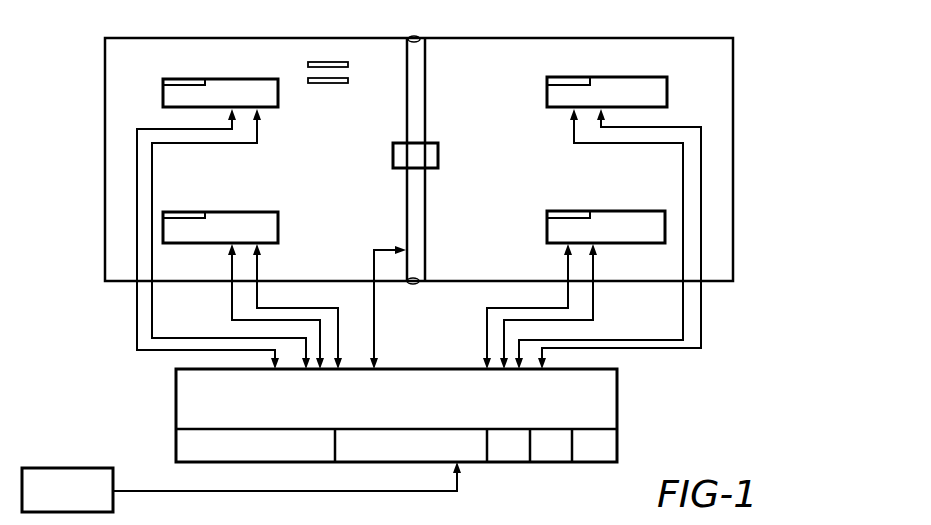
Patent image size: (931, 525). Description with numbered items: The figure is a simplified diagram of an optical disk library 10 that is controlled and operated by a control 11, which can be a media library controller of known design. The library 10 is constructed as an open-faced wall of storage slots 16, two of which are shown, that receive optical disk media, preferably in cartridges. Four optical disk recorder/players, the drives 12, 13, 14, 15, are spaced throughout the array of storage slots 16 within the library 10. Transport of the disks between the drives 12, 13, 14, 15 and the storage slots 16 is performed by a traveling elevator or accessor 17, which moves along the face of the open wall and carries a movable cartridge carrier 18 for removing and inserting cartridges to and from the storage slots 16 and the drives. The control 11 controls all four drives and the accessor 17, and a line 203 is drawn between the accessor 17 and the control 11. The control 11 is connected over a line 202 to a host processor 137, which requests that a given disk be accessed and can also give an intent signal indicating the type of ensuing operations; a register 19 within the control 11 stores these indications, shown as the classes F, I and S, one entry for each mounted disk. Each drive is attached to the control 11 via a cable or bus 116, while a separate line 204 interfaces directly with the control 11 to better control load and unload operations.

The optical disk library 10 is at (733, 80).
The control 11 is at (422, 369).
The drive 12 is at (258, 79).
The drive 13 is at (272, 212).
The drive 14 is at (667, 85).
The drive 15 is at (637, 211).
The storage slots 16 is at (348, 65).
The accessor 17 is at (425, 107).
The cartridge carrier 18 is at (438, 158).
The register 19 is at (550, 429).
The host processor 137 is at (70, 468).
The line 202 is at (184, 491).
The bus control line 203 is at (374, 322).
The line 204 is at (232, 313).
The cable or bus 116 is at (152, 326).